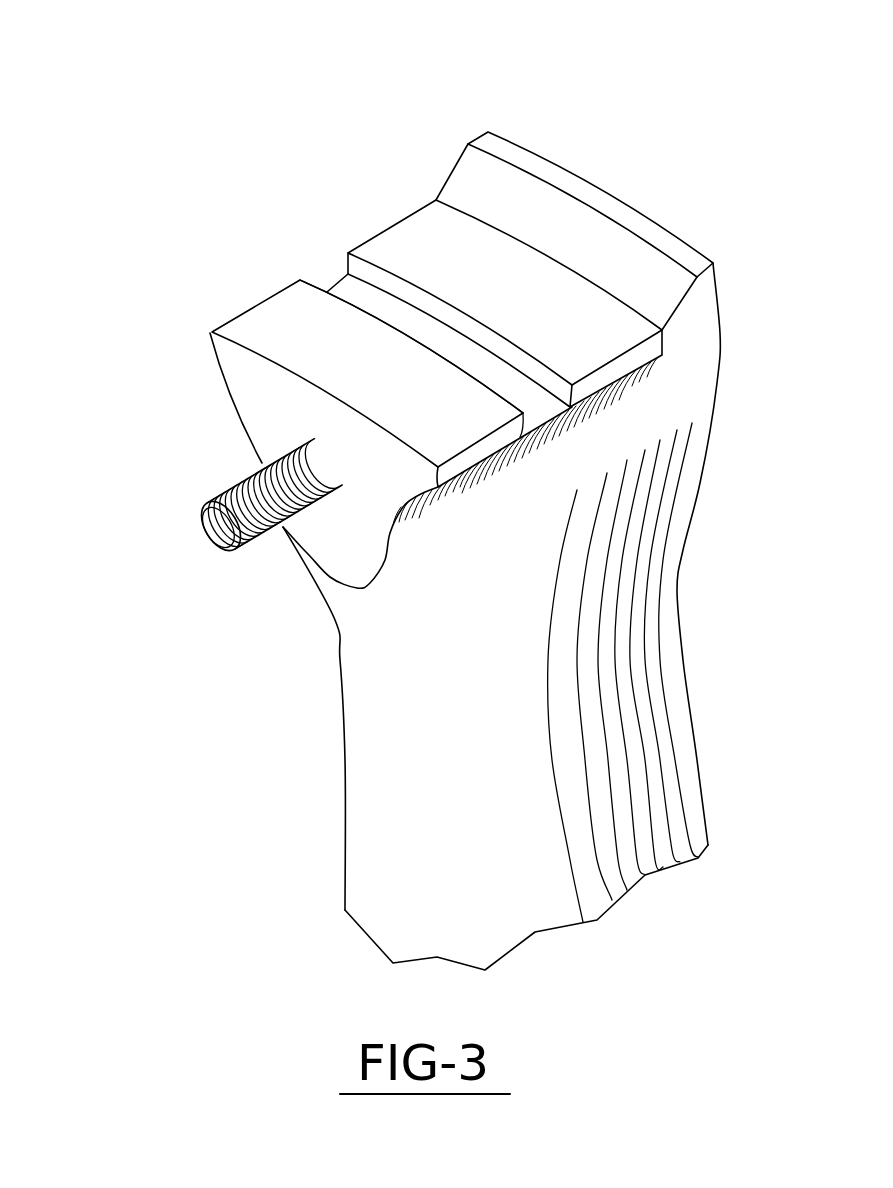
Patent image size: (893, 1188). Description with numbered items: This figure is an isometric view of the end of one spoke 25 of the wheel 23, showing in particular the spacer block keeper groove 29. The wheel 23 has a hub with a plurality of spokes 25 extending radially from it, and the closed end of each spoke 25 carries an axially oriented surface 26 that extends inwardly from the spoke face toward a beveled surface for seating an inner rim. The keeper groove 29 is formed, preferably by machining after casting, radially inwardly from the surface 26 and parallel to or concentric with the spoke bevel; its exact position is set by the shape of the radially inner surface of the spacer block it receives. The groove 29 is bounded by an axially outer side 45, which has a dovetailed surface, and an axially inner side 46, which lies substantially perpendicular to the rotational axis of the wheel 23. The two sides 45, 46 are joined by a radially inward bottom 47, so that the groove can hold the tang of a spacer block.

The wheel 23 is at (317, 720).
The spoke 25 is at (208, 292).
The axially oriented surface 26 is at (423, 218).
The spacer block keeper groove 29 is at (208, 107).
The axially outer groove side 45 is at (317, 282).
The axially inner groove side 46 is at (367, 270).
The groove bottom 47 is at (340, 288).